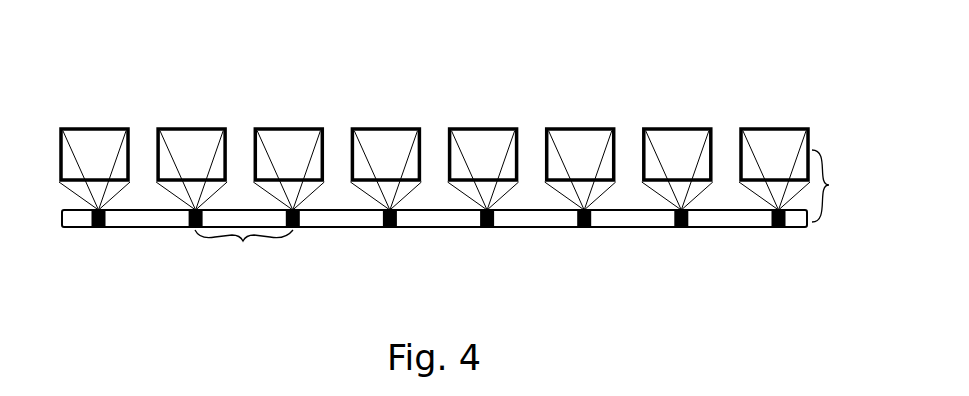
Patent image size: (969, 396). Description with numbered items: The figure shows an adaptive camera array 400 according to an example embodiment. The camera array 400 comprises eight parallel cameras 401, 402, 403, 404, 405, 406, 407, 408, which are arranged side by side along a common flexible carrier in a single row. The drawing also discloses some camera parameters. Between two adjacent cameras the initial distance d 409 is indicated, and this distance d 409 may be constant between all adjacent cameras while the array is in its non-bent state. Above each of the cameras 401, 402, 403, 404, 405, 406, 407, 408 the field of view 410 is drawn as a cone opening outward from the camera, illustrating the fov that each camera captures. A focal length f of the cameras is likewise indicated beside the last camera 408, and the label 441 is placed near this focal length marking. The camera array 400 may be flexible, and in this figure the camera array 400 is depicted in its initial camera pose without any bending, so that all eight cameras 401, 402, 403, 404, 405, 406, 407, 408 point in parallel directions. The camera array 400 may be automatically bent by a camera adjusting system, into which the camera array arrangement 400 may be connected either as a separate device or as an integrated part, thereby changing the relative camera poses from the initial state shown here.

The camera array 400 is at (78, 228).
The camera 401 is at (97, 228).
The camera 402 is at (195, 228).
The camera 403 is at (293, 228).
The camera 404 is at (390, 228).
The camera 405 is at (492, 228).
The camera 406 is at (585, 228).
The camera 407 is at (685, 228).
The camera 408 is at (780, 228).
The initial distance d 409 is at (244, 262).
The field of view 410 is at (103, 128).
The focal length f 441 is at (838, 196).